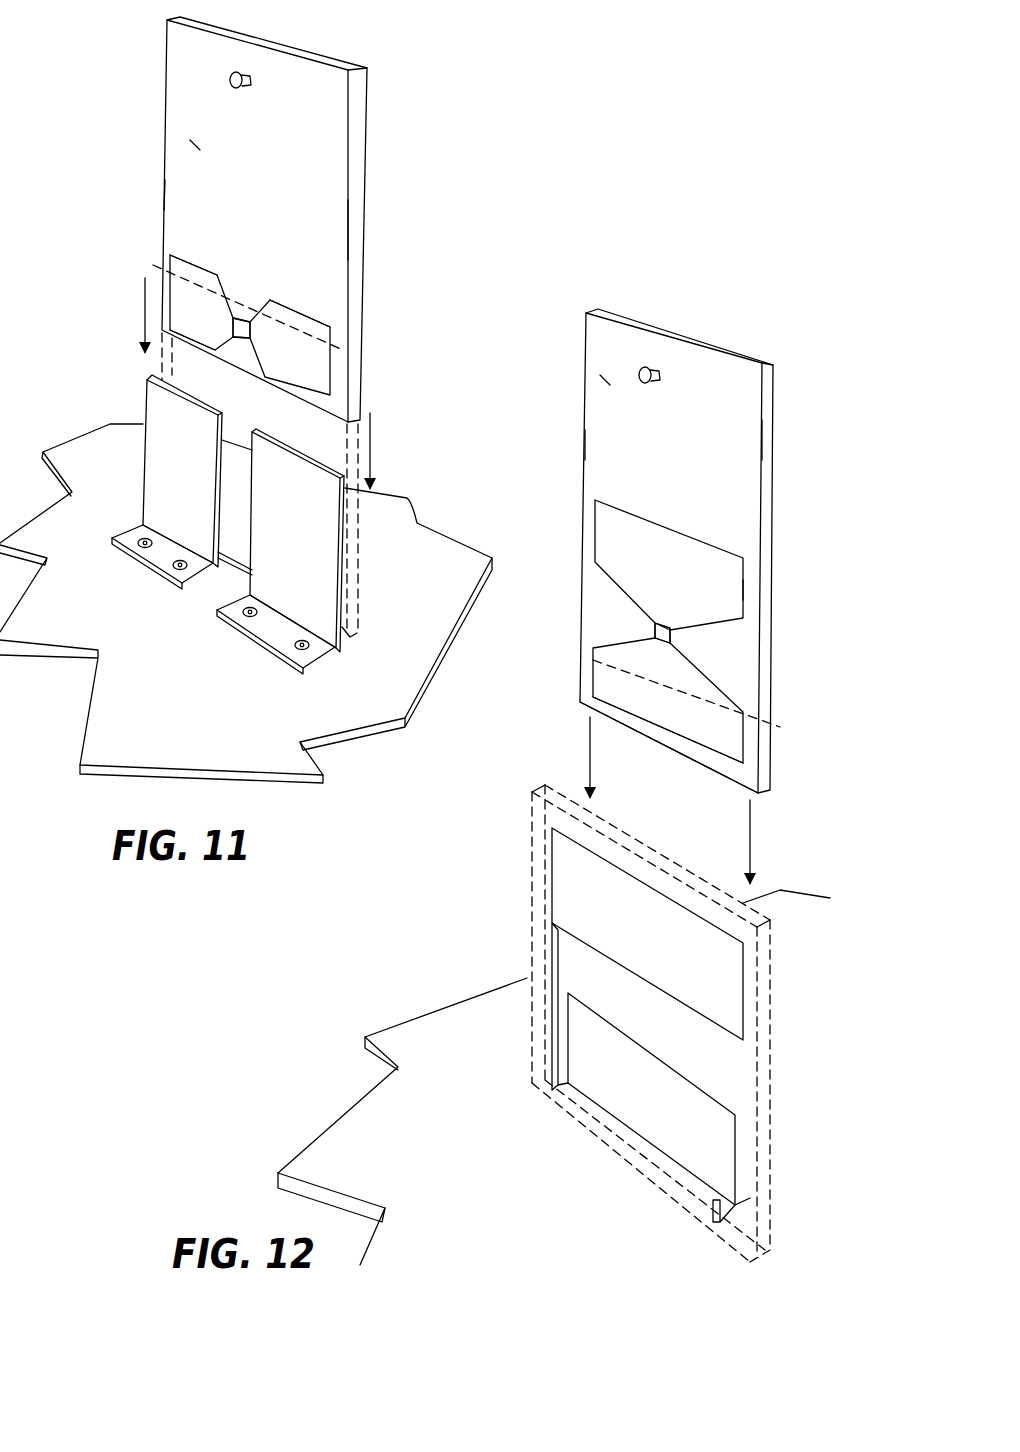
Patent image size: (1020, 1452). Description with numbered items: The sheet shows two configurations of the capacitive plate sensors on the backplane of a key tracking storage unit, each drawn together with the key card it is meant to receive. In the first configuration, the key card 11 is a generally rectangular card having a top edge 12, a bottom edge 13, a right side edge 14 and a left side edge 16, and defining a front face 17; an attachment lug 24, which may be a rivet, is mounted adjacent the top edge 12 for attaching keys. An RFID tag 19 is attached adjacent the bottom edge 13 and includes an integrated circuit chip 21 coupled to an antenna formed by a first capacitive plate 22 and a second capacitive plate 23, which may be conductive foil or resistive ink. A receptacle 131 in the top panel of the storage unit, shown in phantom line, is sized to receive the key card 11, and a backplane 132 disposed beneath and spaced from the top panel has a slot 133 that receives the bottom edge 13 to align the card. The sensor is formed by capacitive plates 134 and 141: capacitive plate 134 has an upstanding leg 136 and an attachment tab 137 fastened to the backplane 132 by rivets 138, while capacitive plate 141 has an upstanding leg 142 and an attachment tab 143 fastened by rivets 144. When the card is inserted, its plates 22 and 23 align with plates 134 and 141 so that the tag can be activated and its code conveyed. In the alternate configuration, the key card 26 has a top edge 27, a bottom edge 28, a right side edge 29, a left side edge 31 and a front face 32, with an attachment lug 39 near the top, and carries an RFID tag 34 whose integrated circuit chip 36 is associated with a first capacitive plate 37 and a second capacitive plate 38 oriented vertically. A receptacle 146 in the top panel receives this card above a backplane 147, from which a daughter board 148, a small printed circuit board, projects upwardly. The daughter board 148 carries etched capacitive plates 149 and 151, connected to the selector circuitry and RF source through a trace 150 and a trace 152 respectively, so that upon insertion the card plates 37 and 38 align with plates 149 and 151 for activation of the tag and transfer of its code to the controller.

In FIG. 11, the key card 11 is at (393, 112).
In FIG. 11, the top edge 12 is at (295, 48).
In FIG. 11, the bottom edge 13 is at (192, 350).
In FIG. 11, the right side edge 14 is at (360, 218).
In FIG. 11, the left side edge 16 is at (163, 195).
In FIG. 11, the front face 17 is at (197, 148).
In FIG. 11, the radio frequency identification tag 19 is at (243, 302).
In FIG. 11, the integrated circuit chip 21 is at (233, 340).
In FIG. 11, the first capacitive plate 22 is at (178, 265).
In FIG. 11, the second capacitive plate 23 is at (280, 312).
In FIG. 11, the attachment lug 24 is at (230, 80).
In FIG. 11, the receptacle 131 is at (372, 352).
In FIG. 11, the backplane 132 is at (457, 570).
In FIG. 11, the slot 133 is at (352, 620).
In FIG. 11, the capacitive plate 134 is at (133, 498).
In FIG. 11, the upstanding leg 136 is at (165, 412).
In FIG. 11, the attachment tab 137 is at (152, 555).
In FIG. 11, the rivets 138 is at (145, 543).
In FIG. 11, the capacitive plate 141 is at (360, 588).
In FIG. 11, the upstanding leg 142 is at (297, 480).
In FIG. 11, the attachment tab 143 is at (280, 632).
In FIG. 11, the rivets 144 is at (228, 615).
In FIG. 12, the key card 26 is at (700, 325).
In FIG. 12, the top edge 27 is at (730, 352).
In FIG. 12, the bottom edge 28 is at (667, 745).
In FIG. 12, the right side edge 29 is at (770, 437).
In FIG. 12, the left side edge 31 is at (585, 447).
In FIG. 12, the front face 32 is at (608, 382).
In FIG. 12, the RFID tag 34 is at (607, 618).
In FIG. 12, the integrated circuit chip 36 is at (672, 635).
In FIG. 12, the first capacitive plate 37 is at (722, 575).
In FIG. 12, the second capacitive plate 38 is at (697, 687).
In FIG. 12, the pin 39 is at (640, 370).
In FIG. 12, the receptacle 146 is at (582, 642).
In FIG. 12, the backplane 147 is at (420, 1050).
In FIG. 12, the daughter board 148 is at (525, 895).
In FIG. 12, the capacitive plate 149 is at (637, 905).
In FIG. 12, the trace 150 is at (550, 965).
In FIG. 12, the capacitive plate 151 is at (627, 1090).
In FIG. 12, the trace 152 is at (713, 1205).